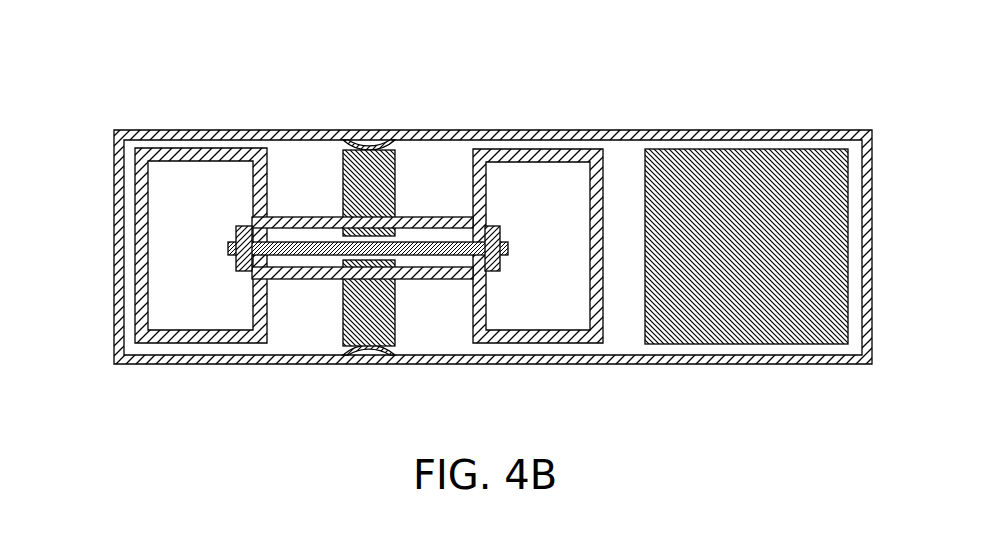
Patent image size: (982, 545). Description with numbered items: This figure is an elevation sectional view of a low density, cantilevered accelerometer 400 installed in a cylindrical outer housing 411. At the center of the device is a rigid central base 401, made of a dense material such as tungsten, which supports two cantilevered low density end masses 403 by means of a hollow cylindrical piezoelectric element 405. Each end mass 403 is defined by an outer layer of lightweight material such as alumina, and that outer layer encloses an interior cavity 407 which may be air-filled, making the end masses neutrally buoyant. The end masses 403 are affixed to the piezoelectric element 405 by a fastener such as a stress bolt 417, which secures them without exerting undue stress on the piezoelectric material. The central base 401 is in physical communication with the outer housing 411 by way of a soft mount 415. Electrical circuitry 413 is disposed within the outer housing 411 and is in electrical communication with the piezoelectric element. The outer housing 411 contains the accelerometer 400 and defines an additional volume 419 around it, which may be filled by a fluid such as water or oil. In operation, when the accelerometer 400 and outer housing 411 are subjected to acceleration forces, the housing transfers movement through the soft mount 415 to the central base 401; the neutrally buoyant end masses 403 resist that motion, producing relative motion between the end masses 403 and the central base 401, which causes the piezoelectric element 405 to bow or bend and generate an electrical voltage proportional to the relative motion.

The accelerometer 400 is at (463, 229).
The central base 401 is at (343, 318).
The low density end mass 403 is at (138, 192).
The hollow cylindrical piezoelectric element 405 is at (298, 217).
The cavity 407 is at (175, 276).
The outer housing 411 is at (586, 132).
The electrical circuitry 413 is at (740, 190).
The soft mount 415 is at (346, 143).
The stress bolt 417 is at (507, 238).
The additional volume 419 is at (432, 332).